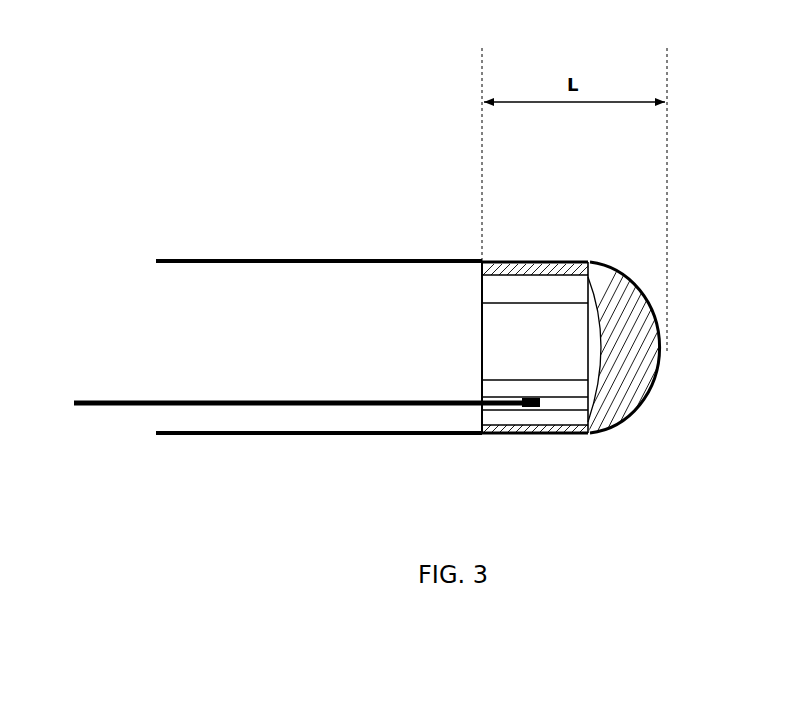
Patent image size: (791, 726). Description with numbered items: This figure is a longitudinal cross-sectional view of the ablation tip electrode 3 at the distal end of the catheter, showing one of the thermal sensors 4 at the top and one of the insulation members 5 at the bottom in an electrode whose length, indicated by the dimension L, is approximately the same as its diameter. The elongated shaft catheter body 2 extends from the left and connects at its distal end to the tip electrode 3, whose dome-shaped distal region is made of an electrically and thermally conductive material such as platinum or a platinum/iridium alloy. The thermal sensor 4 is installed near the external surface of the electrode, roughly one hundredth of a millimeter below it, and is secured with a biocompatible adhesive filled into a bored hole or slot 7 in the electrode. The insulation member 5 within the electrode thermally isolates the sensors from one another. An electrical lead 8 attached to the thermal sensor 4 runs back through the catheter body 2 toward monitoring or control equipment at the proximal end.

The elongated shaft catheter body 2 is at (235, 300).
The ablation tip electrode 3 is at (630, 335).
The thermal sensor 4 is at (565, 402).
The insulation member 5 is at (563, 298).
The bored hole or slot 7 is at (557, 387).
The electrical lead 8 is at (112, 407).